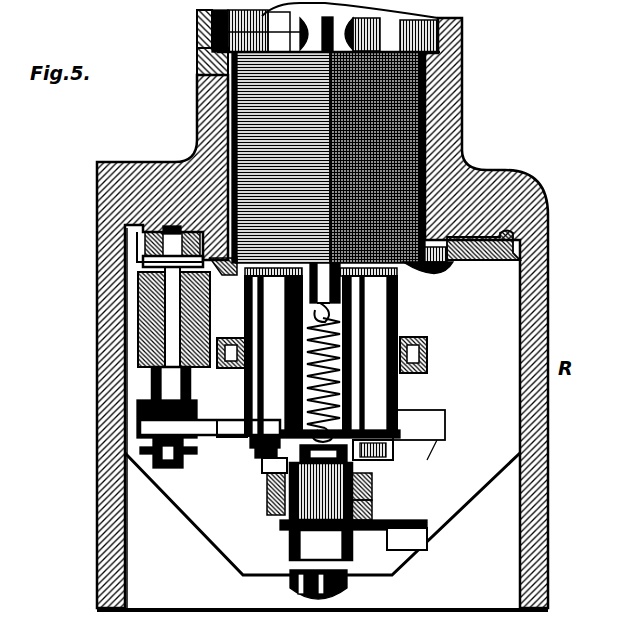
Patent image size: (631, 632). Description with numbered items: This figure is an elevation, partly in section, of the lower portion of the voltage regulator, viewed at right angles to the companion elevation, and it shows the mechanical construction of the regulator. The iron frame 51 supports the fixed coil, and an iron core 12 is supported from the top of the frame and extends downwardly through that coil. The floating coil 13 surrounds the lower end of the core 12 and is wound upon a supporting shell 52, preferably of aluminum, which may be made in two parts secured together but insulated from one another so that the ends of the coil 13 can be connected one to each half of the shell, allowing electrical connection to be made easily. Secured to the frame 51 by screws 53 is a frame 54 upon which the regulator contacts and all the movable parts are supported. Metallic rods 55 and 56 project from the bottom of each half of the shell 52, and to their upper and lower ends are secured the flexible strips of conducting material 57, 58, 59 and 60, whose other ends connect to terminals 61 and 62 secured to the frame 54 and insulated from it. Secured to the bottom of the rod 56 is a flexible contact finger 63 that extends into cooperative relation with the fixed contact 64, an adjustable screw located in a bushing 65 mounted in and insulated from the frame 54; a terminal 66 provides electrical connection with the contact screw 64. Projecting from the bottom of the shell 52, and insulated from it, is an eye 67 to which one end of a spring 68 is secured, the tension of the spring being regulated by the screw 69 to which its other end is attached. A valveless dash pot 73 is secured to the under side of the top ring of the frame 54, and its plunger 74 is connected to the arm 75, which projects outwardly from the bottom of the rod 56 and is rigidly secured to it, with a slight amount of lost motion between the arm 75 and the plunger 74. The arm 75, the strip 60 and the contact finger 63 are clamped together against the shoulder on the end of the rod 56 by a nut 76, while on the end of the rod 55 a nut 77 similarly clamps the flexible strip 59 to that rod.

The iron core 12 is at (198, 27).
The floating coil 13 is at (236, 146).
The iron frame 51 is at (206, 119).
The supporting shell 52 is at (398, 52).
The screws 53 is at (223, 270).
The frame 54 is at (140, 256).
The metallic rod 55 is at (337, 308).
The metallic rod 56 is at (262, 311).
The flexible strip of conducting material 57 is at (262, 329).
The flexible strip of conducting material 58 is at (398, 292).
The flexible strip of conducting material 59 is at (395, 448).
The flexible strip of conducting material 60 is at (262, 442).
The terminal 61 is at (442, 451).
The terminal 62 is at (218, 413).
The flexible contact finger 63 is at (270, 466).
The fixed contact 64 is at (272, 492).
The bushing 65 is at (372, 492).
The terminal 66 is at (410, 536).
The eye 67 is at (325, 308).
The spring 68 is at (338, 397).
The screw 69 is at (372, 462).
The valveless dash pot 73 is at (138, 310).
The plunger 74 is at (138, 384).
The arm 75 is at (222, 424).
The nut 76 is at (250, 465).
The nut 77 is at (396, 425).